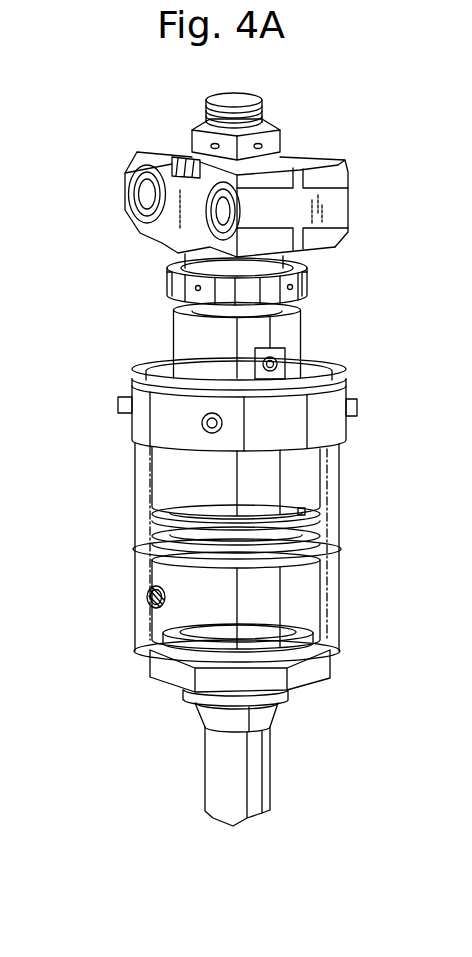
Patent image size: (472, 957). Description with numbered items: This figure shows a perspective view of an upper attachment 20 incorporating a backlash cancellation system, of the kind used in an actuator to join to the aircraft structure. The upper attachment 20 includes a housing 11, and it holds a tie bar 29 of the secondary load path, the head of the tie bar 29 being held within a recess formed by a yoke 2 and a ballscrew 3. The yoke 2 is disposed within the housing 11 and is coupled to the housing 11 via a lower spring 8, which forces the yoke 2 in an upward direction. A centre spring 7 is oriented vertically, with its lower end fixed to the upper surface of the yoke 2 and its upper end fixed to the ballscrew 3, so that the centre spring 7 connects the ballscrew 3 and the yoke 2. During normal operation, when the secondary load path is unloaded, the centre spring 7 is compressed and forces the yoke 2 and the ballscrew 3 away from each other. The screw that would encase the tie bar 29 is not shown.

The upper attachment 20 is at (124, 330).
The housing 11 is at (138, 467).
The ballscrew 3 is at (300, 473).
The centre spring 7 is at (180, 533).
The yoke 2 is at (300, 587).
The lower spring 8 is at (168, 633).
The tie bar 29 is at (255, 762).